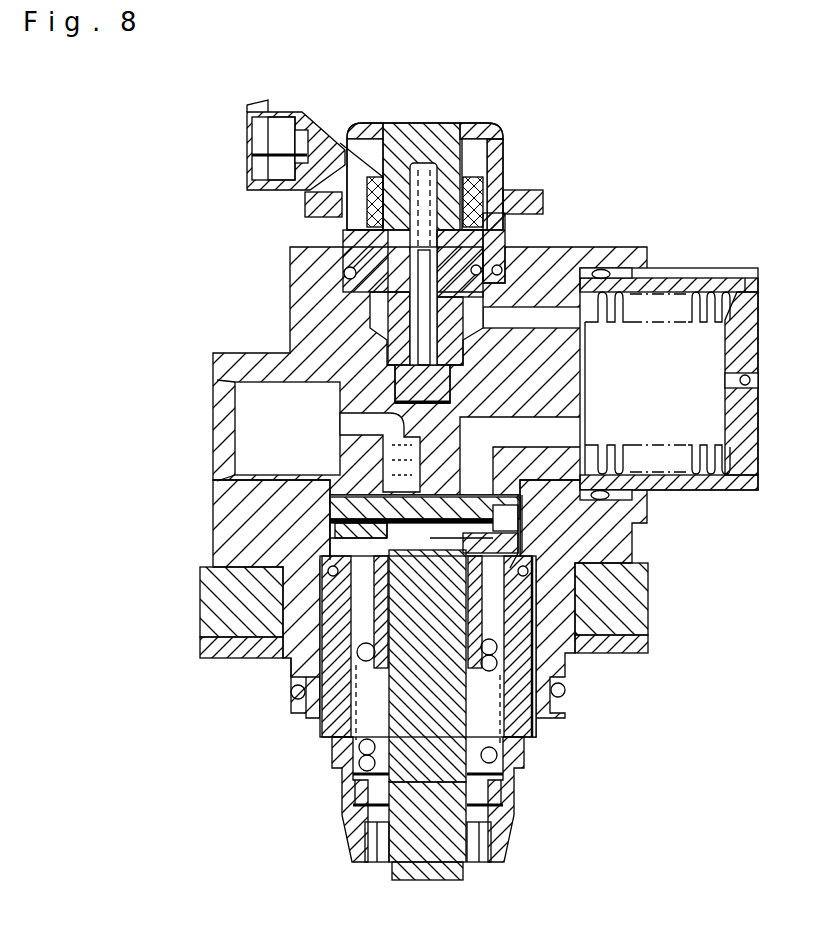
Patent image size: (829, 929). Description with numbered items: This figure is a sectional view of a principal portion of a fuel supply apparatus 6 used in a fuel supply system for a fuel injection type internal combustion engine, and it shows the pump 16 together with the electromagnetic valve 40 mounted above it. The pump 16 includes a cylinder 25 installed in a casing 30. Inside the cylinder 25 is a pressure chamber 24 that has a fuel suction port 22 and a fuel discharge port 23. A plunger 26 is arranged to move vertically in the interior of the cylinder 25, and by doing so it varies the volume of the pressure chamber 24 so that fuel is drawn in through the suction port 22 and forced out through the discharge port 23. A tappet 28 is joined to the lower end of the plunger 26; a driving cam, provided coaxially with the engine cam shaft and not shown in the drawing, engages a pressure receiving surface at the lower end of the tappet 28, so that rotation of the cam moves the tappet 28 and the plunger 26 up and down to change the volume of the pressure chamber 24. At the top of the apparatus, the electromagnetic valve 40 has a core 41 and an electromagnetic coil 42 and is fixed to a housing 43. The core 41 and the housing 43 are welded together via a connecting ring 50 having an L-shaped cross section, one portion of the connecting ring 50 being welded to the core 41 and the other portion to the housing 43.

The fuel supply apparatus 6 is at (600, 248).
The pump 16 is at (517, 757).
The fuel suction port 22 is at (483, 507).
The fuel discharge port 23 is at (390, 507).
The pressure chamber 24 is at (397, 540).
The cylinder 25 is at (380, 665).
The plunger 26 is at (413, 710).
The tappet 28 is at (453, 840).
The casing 30 is at (303, 333).
The electromagnetic valve 40 is at (412, 123).
The core 41 is at (448, 135).
The electromagnetic coil 42 is at (493, 152).
The housing 43 is at (347, 243).
The connecting ring 50 is at (513, 233).